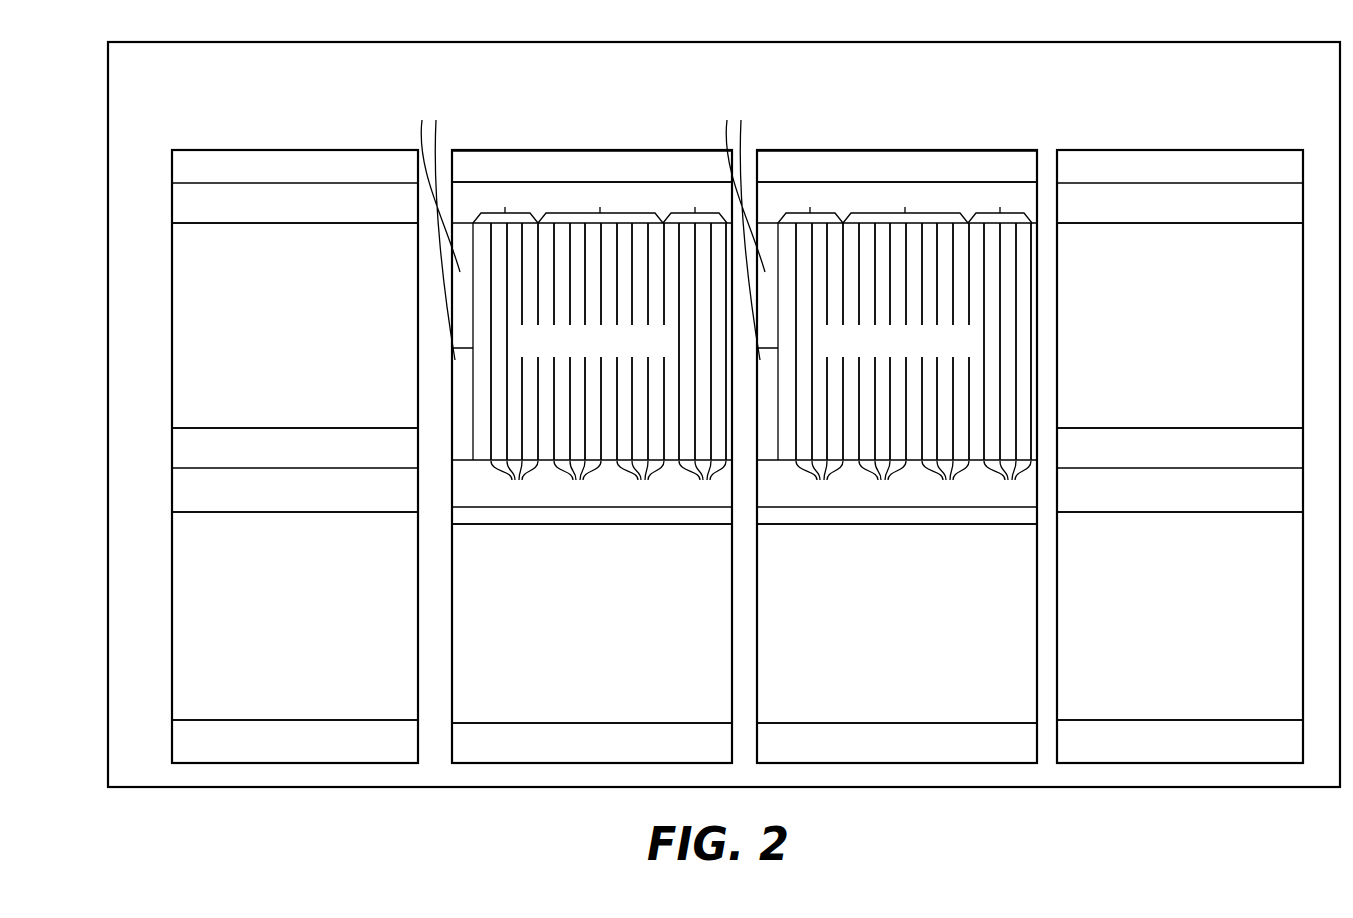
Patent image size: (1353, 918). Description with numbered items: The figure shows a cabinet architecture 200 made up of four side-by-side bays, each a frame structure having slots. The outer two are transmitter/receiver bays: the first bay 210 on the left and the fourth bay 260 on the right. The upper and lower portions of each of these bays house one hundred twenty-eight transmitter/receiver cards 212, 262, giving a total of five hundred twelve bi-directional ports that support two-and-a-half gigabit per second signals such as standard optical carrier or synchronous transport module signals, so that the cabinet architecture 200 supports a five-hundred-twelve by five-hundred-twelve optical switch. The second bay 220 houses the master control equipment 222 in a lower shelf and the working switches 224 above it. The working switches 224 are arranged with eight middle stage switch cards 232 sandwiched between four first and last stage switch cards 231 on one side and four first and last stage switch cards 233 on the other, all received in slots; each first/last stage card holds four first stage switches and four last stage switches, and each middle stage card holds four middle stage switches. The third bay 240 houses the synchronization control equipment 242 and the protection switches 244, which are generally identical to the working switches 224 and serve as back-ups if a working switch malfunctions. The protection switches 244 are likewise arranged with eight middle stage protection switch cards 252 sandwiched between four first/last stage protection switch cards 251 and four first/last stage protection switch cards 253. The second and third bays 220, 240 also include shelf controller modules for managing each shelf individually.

The cabinet architecture 200 is at (137, 789).
The first bay 210 is at (178, 150).
The transmitter/receiver cards 212 is at (296, 298).
The second bay 220 is at (465, 150).
The master control equipment 222 is at (595, 640).
The working switches 224 is at (592, 166).
The first and last stage switch cards 231 is at (505, 203).
The middle stage switch cards 232 is at (600, 203).
The first and last stage switch cards 233 is at (695, 203).
The third bay 240 is at (772, 150).
The synchronization control equipment 242 is at (899, 640).
The protection switches 244 is at (897, 166).
The first/last stage protection switch cards 251 is at (810, 203).
The middle stage protection switch cards 252 is at (905, 203).
The first/last stage protection switch cards 253 is at (1000, 203).
The fourth bay 260 is at (1068, 150).
The transmitter/receiver cards 262 is at (1173, 293).